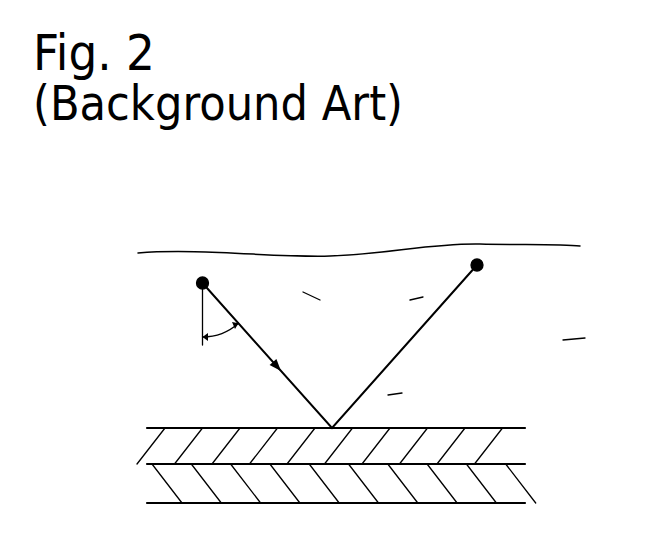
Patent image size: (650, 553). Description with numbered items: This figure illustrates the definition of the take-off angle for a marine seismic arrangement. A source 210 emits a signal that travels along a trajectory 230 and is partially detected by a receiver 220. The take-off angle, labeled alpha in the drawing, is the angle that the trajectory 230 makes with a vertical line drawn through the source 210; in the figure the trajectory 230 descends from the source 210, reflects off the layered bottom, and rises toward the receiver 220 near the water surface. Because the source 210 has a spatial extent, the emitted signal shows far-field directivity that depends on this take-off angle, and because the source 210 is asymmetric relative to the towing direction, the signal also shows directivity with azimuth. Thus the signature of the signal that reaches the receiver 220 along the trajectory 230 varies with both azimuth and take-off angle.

The source 210 is at (203, 277).
The receiver 220 is at (481, 260).
The trajectory 230 is at (257, 338).